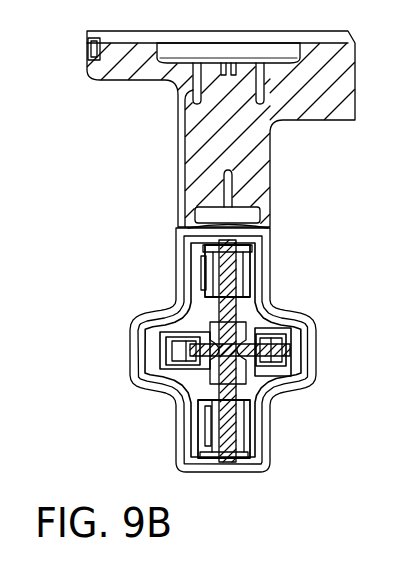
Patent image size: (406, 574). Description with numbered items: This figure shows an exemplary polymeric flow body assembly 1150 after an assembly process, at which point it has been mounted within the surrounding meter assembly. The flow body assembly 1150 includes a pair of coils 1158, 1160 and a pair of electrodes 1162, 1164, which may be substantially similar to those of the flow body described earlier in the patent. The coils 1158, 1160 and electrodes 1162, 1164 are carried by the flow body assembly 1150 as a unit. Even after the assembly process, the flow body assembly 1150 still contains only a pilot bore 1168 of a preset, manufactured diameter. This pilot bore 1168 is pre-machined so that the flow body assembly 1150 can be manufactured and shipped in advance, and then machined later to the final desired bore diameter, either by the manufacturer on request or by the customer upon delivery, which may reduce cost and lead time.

The flow body assembly 1150 is at (175, 297).
The coil 1158 is at (227, 290).
The coil 1160 is at (228, 418).
The electrode 1162 is at (197, 393).
The electrode 1164 is at (253, 378).
The pilot bore 1168 is at (273, 310).